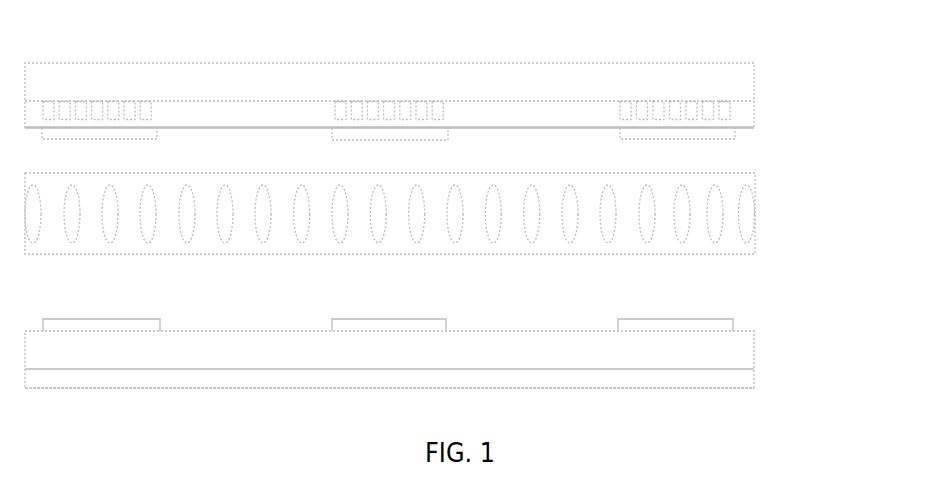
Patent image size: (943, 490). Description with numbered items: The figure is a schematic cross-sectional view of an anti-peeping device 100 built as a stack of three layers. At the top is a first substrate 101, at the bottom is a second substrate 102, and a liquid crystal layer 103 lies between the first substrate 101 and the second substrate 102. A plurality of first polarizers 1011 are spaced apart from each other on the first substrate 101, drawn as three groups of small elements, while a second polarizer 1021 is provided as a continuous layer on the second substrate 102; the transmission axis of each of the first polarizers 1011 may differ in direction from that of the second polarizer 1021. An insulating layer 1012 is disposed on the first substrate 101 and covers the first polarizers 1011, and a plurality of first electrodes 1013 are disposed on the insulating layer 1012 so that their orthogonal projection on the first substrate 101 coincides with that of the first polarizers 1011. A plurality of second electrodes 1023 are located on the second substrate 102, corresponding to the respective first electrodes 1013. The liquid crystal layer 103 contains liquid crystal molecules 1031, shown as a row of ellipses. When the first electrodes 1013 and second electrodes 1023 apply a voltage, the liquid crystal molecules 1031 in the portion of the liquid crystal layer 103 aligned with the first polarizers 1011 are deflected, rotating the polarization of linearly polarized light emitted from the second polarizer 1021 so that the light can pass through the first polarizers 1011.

The anti-peeping device 100 is at (740, 43).
The first substrate 101 is at (467, 70).
The first polarizers 1011 is at (733, 110).
The insulating layer 1012 is at (744, 120).
The first electrodes 1013 is at (657, 142).
The liquid crystal layer 103 is at (743, 170).
The liquid crystal molecules 1031 is at (72, 197).
The second substrate 102 is at (743, 350).
The second polarizer 1021 is at (745, 382).
The second electrodes 1023 is at (663, 325).